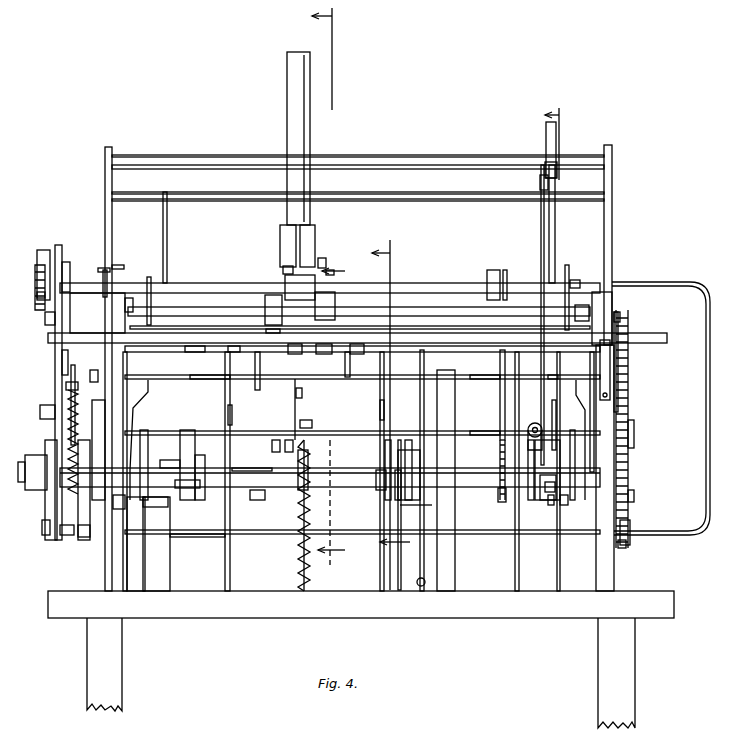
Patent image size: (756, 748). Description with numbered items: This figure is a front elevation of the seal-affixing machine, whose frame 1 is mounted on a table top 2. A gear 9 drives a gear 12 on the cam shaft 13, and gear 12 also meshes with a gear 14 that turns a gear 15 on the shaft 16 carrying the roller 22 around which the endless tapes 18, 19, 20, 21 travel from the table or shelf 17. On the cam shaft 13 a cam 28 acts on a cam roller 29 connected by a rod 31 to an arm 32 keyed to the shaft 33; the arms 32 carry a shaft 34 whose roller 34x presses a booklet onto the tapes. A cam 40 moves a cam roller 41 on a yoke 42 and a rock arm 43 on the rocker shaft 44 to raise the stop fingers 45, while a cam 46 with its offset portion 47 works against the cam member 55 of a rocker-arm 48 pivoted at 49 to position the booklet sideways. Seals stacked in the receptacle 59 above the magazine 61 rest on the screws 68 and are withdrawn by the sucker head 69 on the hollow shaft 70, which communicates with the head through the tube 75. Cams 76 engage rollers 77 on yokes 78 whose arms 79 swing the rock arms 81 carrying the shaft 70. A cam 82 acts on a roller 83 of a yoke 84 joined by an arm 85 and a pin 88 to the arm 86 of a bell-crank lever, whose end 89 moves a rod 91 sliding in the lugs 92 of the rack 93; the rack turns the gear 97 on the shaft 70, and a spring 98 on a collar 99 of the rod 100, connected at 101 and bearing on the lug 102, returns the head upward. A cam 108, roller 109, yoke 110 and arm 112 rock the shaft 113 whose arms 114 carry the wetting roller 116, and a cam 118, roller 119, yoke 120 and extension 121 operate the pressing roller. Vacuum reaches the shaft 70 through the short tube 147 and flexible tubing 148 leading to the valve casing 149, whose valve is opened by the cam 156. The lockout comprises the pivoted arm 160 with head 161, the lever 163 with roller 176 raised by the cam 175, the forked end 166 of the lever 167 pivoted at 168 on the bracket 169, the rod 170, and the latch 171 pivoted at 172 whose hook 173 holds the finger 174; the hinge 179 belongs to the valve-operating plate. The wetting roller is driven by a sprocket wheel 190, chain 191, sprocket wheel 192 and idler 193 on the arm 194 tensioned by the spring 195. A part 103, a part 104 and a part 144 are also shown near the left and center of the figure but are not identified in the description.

The frame 1 is at (105, 180).
The table top 2 is at (48, 604).
The gear 9 is at (625, 548).
The gear 12 is at (628, 525).
The cam shaft 13 is at (480, 488).
The gear 14 is at (629, 385).
The gear 15 is at (637, 316).
The shaft 16 is at (637, 350).
The table or shelf 17 is at (48, 337).
The endless belt or tape 18 is at (335, 141).
The endless belt or tape 19 is at (322, 357).
The endless belt or tape 20 is at (292, 354).
The endless belt or tape 21 is at (232, 352).
The roller 22 is at (190, 352).
The cam 28 is at (630, 495).
The cam roller 29 is at (630, 447).
The rod 31 is at (629, 405).
The arm 32 is at (594, 316).
The shaft 33 is at (125, 309).
The shaft 34 is at (128, 318).
The roller 34x is at (285, 285).
The cam 40 is at (90, 455).
The cam roller 41 is at (82, 537).
The yoke 42 is at (100, 470).
The rock arm 43 is at (97, 366).
The rocker shaft 44 is at (212, 380).
The fingers or arms 45 is at (258, 390).
The cam 46 is at (420, 425).
The portion of cam 47 is at (408, 445).
The rocker-arm 48 is at (355, 355).
The pivot 49 is at (418, 580).
The cam member 55 is at (425, 504).
The receptacle 59 is at (287, 143).
The magazine 61 is at (280, 239).
The screws 68 is at (326, 260).
The sucker head 69 is at (317, 246).
The hollow shaft 70 is at (218, 283).
The tube 75 is at (339, 273).
The cams 76 is at (125, 500).
The roller 77 is at (141, 440).
The yoke 78 is at (165, 460).
The arm 79 is at (136, 405).
The rock arm 81 is at (147, 276).
The cam 82 is at (42, 527).
The roller 83 is at (40, 455).
The yoke 84 is at (45, 505).
The arm 85 is at (71, 395).
The arm of bell-crank lever 86 is at (62, 362).
The pin 88 is at (45, 318).
The end of bell-crank lever 89 is at (70, 270).
The rod 91 is at (58, 248).
The lugs 92 is at (44, 250).
The rack 93 is at (35, 270).
The gear 97 is at (37, 296).
The spring 98 is at (67, 420).
The collar 99 is at (66, 385).
The rod 100 is at (40, 412).
The connection 101 is at (103, 273).
The lug 102 is at (62, 535).
The stud 103 is at (122, 265).
The stud 104 is at (103, 268).
The cam 108 is at (545, 490).
The roller 109 is at (537, 452).
The yoke 110 is at (548, 505).
The arm 112 is at (552, 408).
The rock shaft 113 is at (358, 187).
The arms 114 is at (167, 218).
The wetting roller 116 is at (283, 270).
The cam 118 is at (220, 462).
The cam roller 119 is at (272, 445).
The yoke 120 is at (262, 468).
The extension 121 is at (228, 412).
The rail 144 is at (482, 379).
The short tube 147 is at (590, 276).
The flexible tubing 148 is at (712, 368).
The valve casing 149 is at (170, 572).
The cam 156 is at (176, 452).
The pivoted arm 160 is at (302, 392).
The head 161 is at (279, 332).
The lever 163 is at (279, 442).
The forked end 166 is at (312, 424).
The lever 167 is at (485, 431).
The pivot 168 is at (525, 445).
The bracket 169 is at (455, 558).
The vertically extending rod 170 is at (541, 233).
The latch-member 171 is at (556, 136).
The pivot 172 is at (466, 155).
The hook-like projection 173 is at (560, 162).
The finger 174 is at (545, 182).
The cam 175 is at (190, 497).
The roller 176 is at (306, 460).
The hinge 179 is at (165, 508).
The sprocket wheel 190 is at (502, 502).
The sprocket chain 191 is at (500, 356).
The sprocket wheel 192 is at (490, 275).
The idler 193 is at (492, 470).
The arm 194 is at (552, 379).
The spring 195 is at (505, 288).